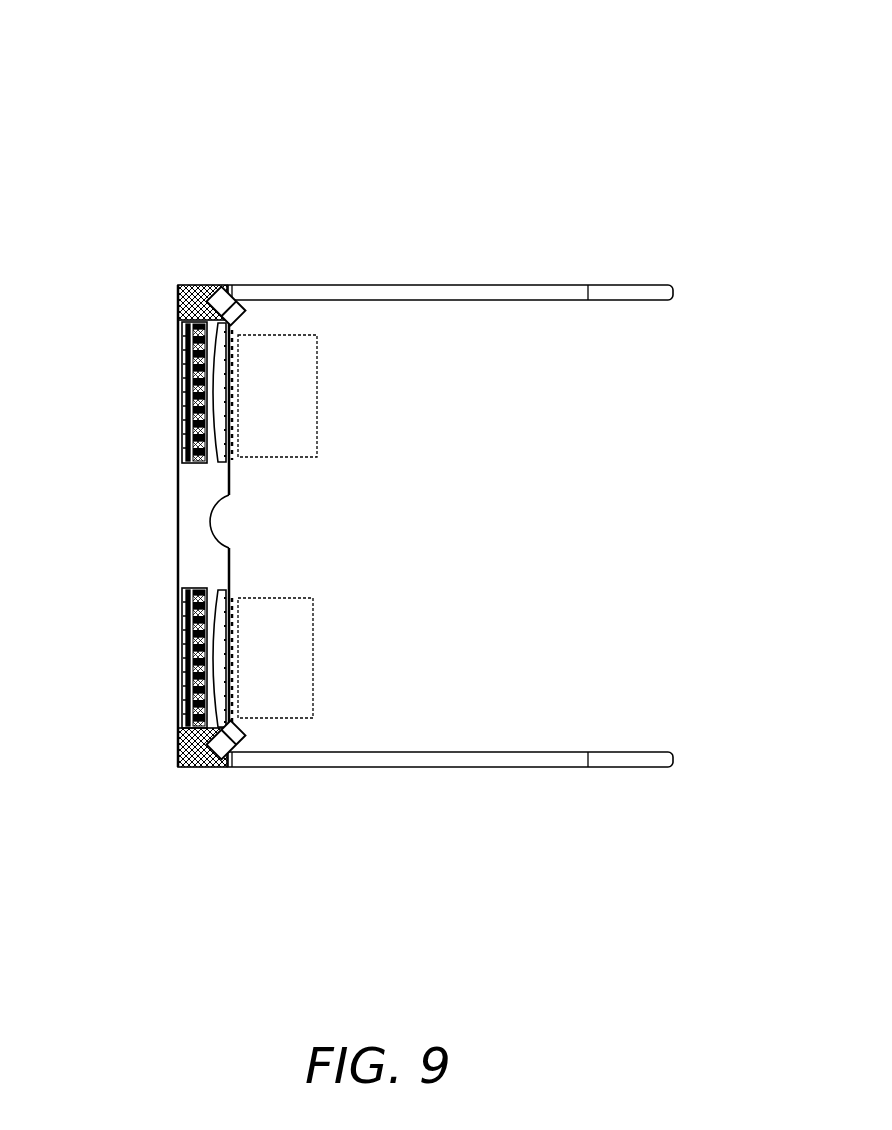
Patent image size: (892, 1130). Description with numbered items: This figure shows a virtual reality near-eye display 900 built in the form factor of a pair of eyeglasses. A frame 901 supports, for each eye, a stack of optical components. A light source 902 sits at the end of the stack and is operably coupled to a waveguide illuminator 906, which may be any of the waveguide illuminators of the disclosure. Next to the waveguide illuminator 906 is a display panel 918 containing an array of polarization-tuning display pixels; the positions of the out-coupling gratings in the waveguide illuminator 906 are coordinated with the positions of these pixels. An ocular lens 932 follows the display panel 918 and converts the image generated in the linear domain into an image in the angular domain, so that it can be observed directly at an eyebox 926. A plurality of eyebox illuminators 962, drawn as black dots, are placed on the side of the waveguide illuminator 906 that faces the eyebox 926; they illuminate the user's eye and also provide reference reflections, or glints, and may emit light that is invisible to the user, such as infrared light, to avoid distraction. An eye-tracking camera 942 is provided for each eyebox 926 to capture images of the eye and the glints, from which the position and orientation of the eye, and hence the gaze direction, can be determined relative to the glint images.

The near-eye display 900 is at (409, 128).
The frame 901 is at (553, 285).
The light source 902 is at (178, 298).
The waveguide illuminator 906 is at (184, 350).
The display panel 918 is at (194, 380).
The ocular lens 932 is at (218, 412).
The eyebox illuminators 962 is at (231, 462).
The eyebox 926 is at (297, 406).
The eye-tracking camera 942 is at (222, 287).